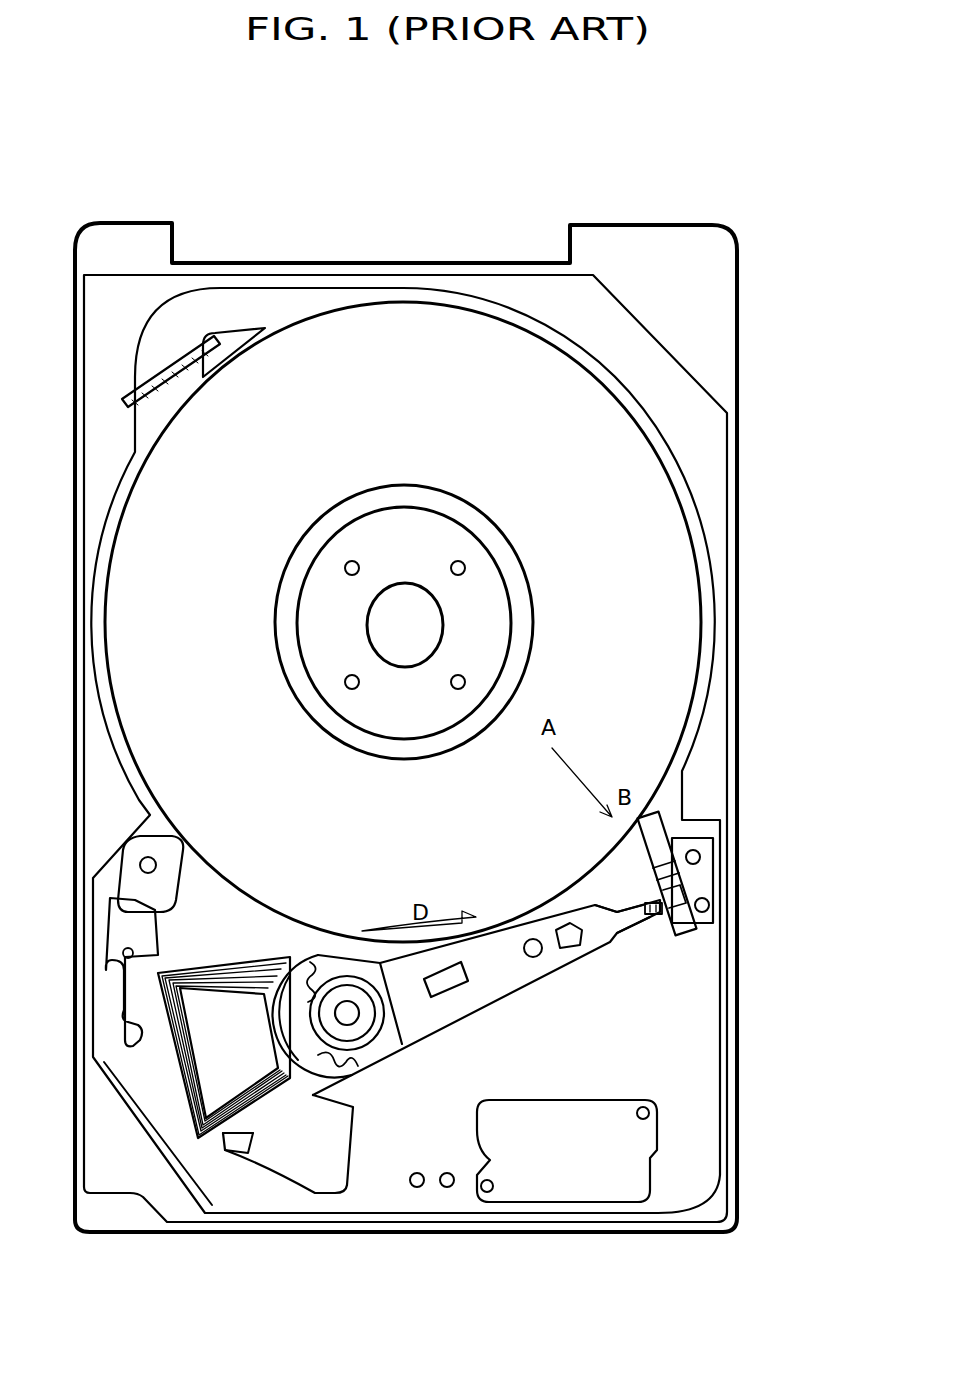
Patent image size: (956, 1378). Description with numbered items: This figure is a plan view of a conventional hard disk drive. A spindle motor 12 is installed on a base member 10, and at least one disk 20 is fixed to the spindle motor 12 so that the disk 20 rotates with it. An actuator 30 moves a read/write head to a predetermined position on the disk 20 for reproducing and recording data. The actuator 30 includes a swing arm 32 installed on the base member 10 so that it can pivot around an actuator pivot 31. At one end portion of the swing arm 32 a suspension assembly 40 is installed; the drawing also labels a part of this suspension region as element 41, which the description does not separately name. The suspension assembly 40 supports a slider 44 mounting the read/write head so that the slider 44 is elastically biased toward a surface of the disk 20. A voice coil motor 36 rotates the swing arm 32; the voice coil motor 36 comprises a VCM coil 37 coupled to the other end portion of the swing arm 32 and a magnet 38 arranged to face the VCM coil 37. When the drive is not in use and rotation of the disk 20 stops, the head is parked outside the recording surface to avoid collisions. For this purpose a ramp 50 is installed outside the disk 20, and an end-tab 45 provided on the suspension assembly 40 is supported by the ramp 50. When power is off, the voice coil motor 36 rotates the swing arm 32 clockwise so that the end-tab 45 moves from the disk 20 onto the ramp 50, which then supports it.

The base member 10 is at (713, 770).
The spindle motor 12 is at (435, 538).
The disk 20 is at (682, 586).
The actuator 30 is at (473, 1010).
The actuator pivot 31 is at (347, 1013).
The swing arm 32 is at (467, 993).
The voice coil motor (VCM) 36 is at (255, 1153).
The VCM coil 37 is at (200, 1138).
The magnet 38 is at (317, 1183).
The suspension assembly 40 is at (633, 966).
The load beam 41 is at (600, 940).
The slider 44 is at (652, 918).
The end-tab 45 is at (709, 905).
The ramp 50 is at (700, 857).